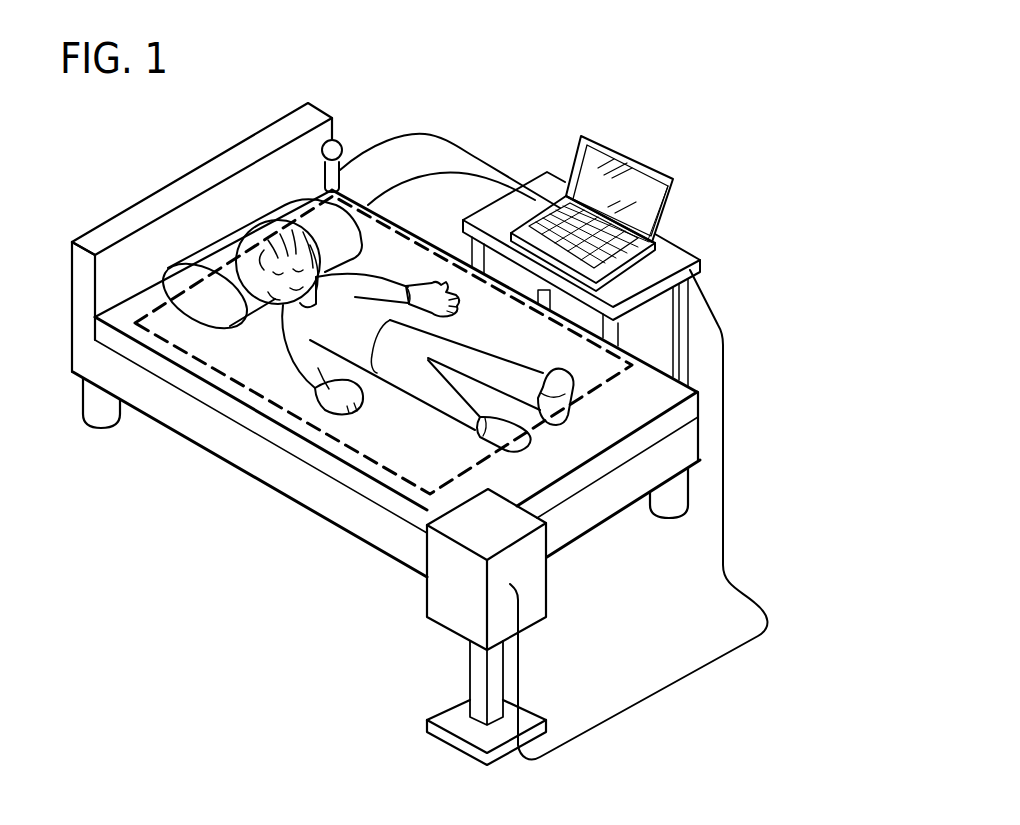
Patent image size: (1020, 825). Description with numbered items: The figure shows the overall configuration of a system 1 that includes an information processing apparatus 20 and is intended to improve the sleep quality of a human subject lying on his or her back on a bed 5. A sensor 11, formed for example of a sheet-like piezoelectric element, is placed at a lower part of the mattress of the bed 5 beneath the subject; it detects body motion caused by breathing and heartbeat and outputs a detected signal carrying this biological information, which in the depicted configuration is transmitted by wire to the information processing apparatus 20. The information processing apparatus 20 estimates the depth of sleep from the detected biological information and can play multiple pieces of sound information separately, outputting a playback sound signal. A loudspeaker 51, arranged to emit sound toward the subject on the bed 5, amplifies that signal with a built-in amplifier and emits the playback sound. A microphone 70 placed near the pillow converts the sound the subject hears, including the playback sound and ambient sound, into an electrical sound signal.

The system 1 is at (812, 76).
The bed 5 is at (227, 437).
The sensor 11 is at (352, 452).
The information processing apparatus 20 is at (616, 150).
The loudspeaker 51 is at (460, 606).
The microphone 70 is at (338, 141).